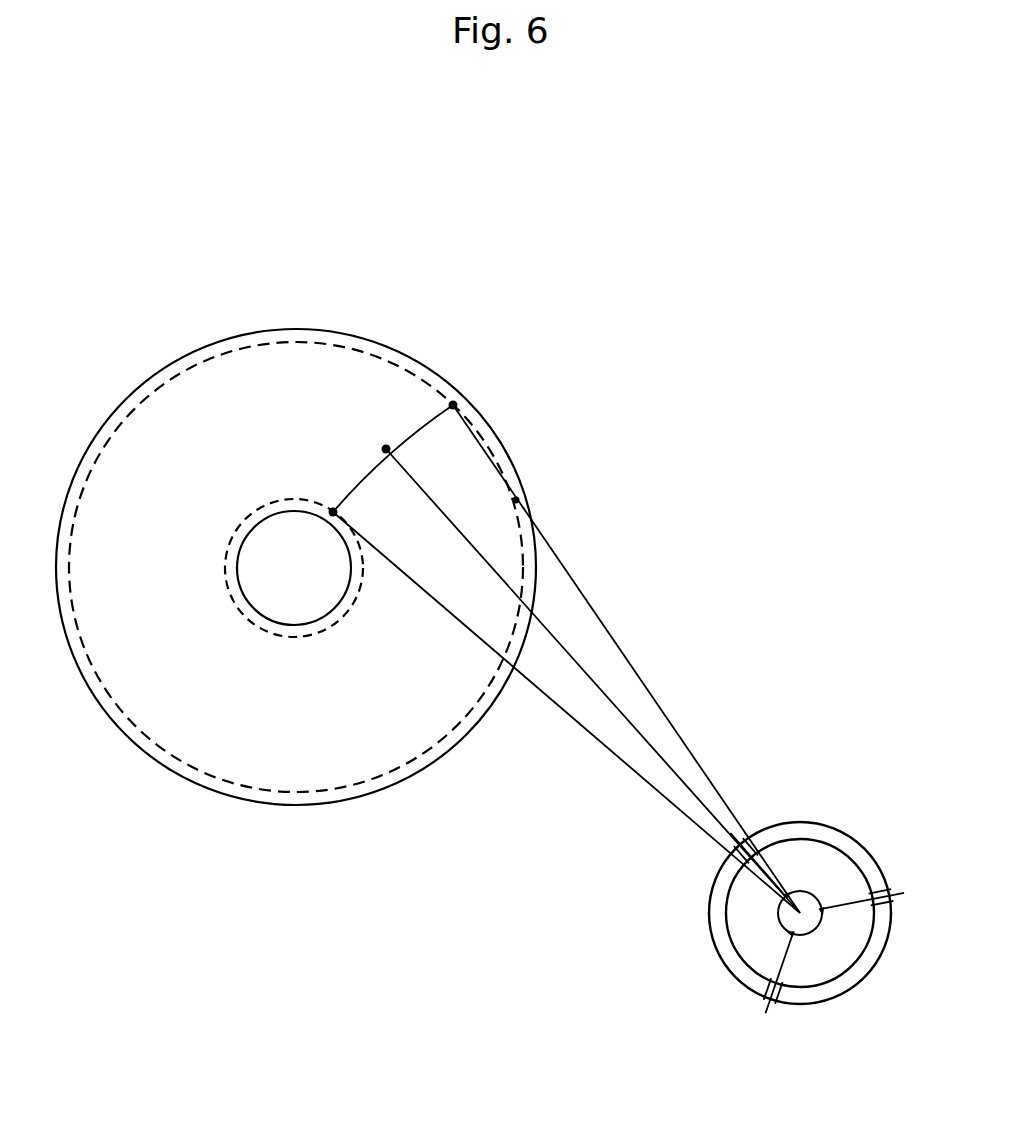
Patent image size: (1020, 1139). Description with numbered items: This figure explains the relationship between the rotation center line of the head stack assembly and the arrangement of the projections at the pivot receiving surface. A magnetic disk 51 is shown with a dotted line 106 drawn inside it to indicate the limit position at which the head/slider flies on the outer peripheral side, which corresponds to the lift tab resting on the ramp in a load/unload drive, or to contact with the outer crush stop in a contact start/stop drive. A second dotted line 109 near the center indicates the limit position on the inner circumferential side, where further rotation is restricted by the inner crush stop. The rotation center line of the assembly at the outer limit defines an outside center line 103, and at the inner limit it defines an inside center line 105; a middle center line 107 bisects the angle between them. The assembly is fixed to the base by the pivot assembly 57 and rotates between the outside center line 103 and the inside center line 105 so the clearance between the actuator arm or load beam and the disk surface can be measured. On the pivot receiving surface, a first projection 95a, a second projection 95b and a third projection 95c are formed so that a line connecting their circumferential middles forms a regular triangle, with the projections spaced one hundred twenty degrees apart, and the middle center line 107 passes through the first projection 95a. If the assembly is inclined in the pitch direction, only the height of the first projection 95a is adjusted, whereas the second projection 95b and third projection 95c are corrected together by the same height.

The magnetic disk 51 is at (340, 331).
The dotted line indicating outer peripheral limit position 106 is at (398, 366).
The dotted line indicating inner circumferential limit position 109 is at (278, 502).
The outside center line 103 is at (549, 548).
The middle center line 107 is at (563, 648).
The inside center line 105 is at (534, 688).
The pivot assembly 57 is at (774, 915).
The first projection 95a is at (753, 834).
The second projection 95b is at (893, 880).
The third projection 95c is at (781, 1005).